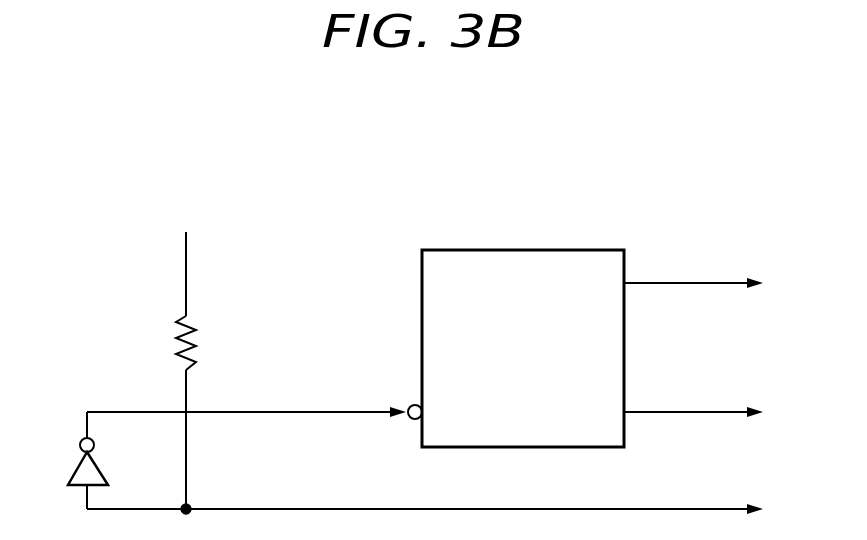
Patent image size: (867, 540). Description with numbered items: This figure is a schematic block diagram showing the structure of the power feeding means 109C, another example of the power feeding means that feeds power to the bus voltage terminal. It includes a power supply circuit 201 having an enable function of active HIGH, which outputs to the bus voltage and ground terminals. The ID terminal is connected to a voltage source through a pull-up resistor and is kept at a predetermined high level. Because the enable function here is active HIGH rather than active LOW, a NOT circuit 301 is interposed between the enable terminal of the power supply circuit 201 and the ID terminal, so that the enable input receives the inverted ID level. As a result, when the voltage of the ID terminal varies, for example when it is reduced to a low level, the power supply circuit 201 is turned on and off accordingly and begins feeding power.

The power feeding means 109C is at (395, 137).
The power supply circuit 201 is at (533, 250).
The NOT circuit 301 is at (76, 466).